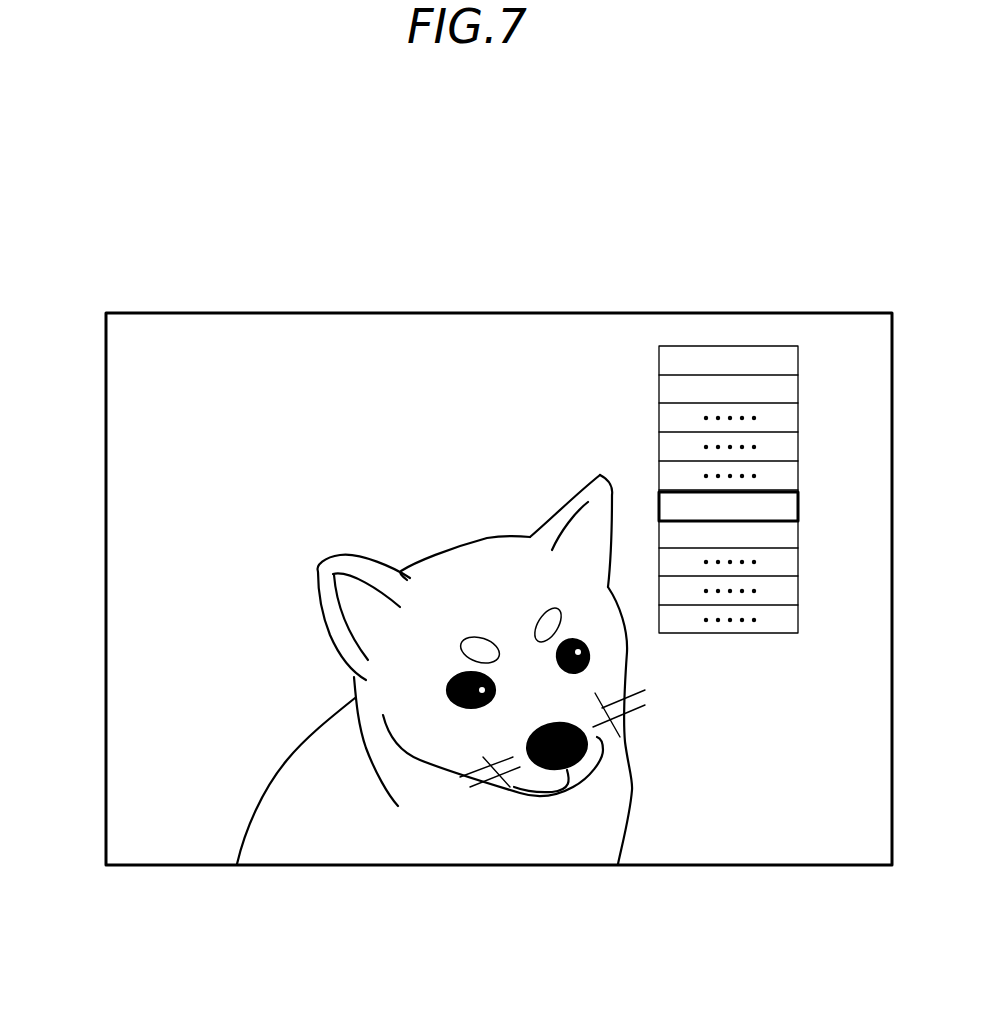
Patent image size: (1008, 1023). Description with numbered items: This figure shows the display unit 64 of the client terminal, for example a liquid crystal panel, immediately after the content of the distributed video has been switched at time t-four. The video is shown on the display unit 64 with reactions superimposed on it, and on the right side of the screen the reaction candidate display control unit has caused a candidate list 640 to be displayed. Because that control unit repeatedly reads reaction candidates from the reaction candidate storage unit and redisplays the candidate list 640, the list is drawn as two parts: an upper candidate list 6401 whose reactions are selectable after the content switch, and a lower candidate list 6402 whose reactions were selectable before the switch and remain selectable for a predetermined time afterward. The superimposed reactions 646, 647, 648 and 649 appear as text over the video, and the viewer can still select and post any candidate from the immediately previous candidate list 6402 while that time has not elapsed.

The display unit 64 is at (595, 312).
The reaction candidate list 640 is at (752, 347).
The candidate list selectable after the time t4 6401 is at (808, 346).
The candidate list selectable before the time t4 6402 is at (808, 493).
The recognized word DOG 646 is at (228, 345).
The recognized word FLUFFY 647 is at (433, 347).
The unrecognized speech text 648 is at (293, 425).
The uncertain word TERRIER? 649 is at (173, 537).